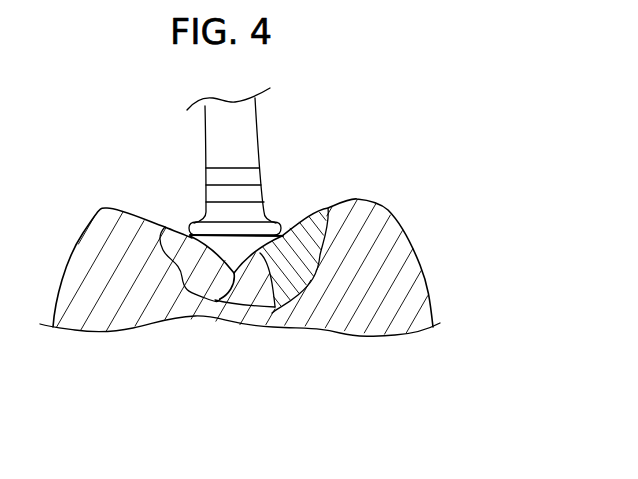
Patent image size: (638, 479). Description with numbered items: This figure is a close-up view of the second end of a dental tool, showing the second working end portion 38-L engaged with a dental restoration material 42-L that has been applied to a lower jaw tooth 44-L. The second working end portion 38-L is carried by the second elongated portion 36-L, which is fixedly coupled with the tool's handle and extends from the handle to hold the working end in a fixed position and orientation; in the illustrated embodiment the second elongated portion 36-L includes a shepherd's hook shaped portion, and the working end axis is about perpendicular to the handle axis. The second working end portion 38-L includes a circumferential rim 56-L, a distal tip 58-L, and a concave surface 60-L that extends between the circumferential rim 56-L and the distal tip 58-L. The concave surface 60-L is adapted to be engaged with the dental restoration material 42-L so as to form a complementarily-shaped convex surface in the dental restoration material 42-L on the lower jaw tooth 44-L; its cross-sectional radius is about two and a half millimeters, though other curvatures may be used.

The second elongated portion 36-L is at (248, 117).
The second working end portion 38-L is at (347, 186).
The dental restoration material 42-L is at (165, 227).
The lower jaw tooth 44-L is at (420, 257).
The circumferential rim 56-L is at (285, 222).
The distal tip 58-L is at (220, 299).
The concave surface 60-L is at (252, 250).